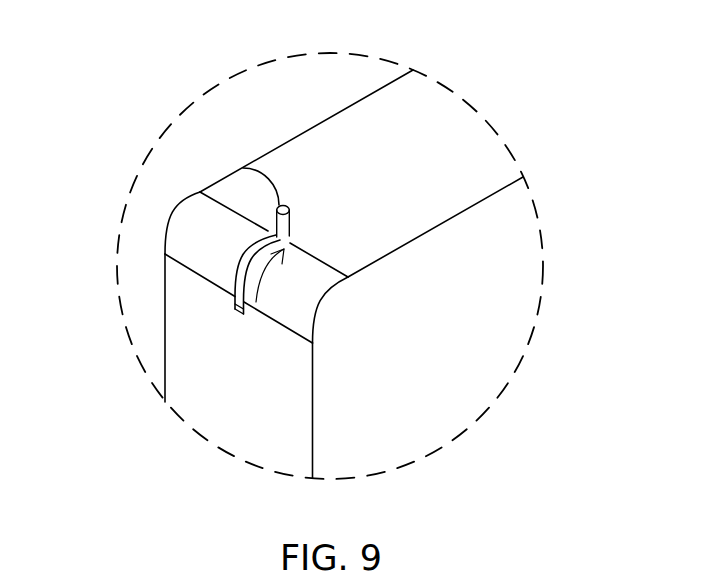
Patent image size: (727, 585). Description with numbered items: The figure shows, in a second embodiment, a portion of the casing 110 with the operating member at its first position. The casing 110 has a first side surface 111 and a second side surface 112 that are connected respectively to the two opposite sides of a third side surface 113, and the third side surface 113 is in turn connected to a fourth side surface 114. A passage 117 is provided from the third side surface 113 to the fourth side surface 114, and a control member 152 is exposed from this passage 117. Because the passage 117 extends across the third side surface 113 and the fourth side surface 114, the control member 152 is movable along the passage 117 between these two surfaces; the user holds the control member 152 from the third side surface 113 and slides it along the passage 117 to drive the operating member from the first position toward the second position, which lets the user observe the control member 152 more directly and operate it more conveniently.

The casing 110 is at (151, 287).
The first side surface 111 is at (291, 140).
The second side surface 112 is at (517, 279).
The third side surface 113 is at (463, 133).
The fourth side surface 114 is at (187, 352).
The passage 117 is at (236, 256).
The control member 152 is at (243, 168).